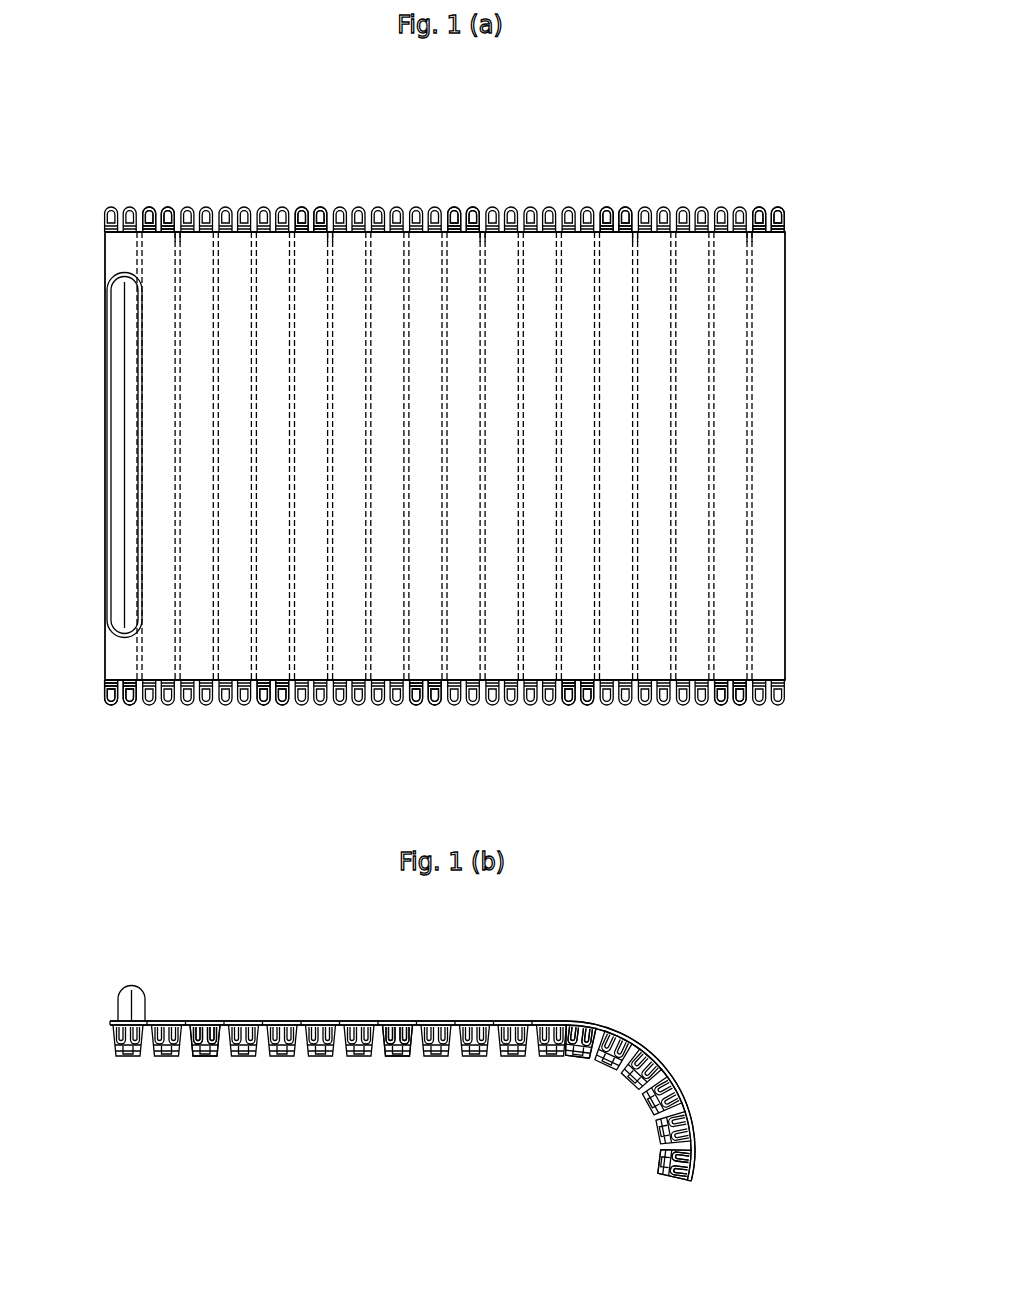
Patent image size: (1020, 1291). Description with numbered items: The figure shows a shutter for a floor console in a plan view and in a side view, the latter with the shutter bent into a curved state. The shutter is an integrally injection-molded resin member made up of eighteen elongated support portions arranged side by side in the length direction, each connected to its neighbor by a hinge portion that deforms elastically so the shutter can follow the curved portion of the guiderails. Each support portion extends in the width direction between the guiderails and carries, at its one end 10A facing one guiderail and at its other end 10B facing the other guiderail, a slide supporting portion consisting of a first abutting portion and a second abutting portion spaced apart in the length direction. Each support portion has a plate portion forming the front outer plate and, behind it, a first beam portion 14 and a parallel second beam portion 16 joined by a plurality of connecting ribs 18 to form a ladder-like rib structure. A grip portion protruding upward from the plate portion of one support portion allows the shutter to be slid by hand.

The one end of the support portion 10A is at (163, 678).
The other end of the support portion 10B is at (158, 235).
The first beam portion 14 is at (196, 1058).
The second beam portion 16 is at (214, 1058).
The connecting rib 18 is at (205, 1058).